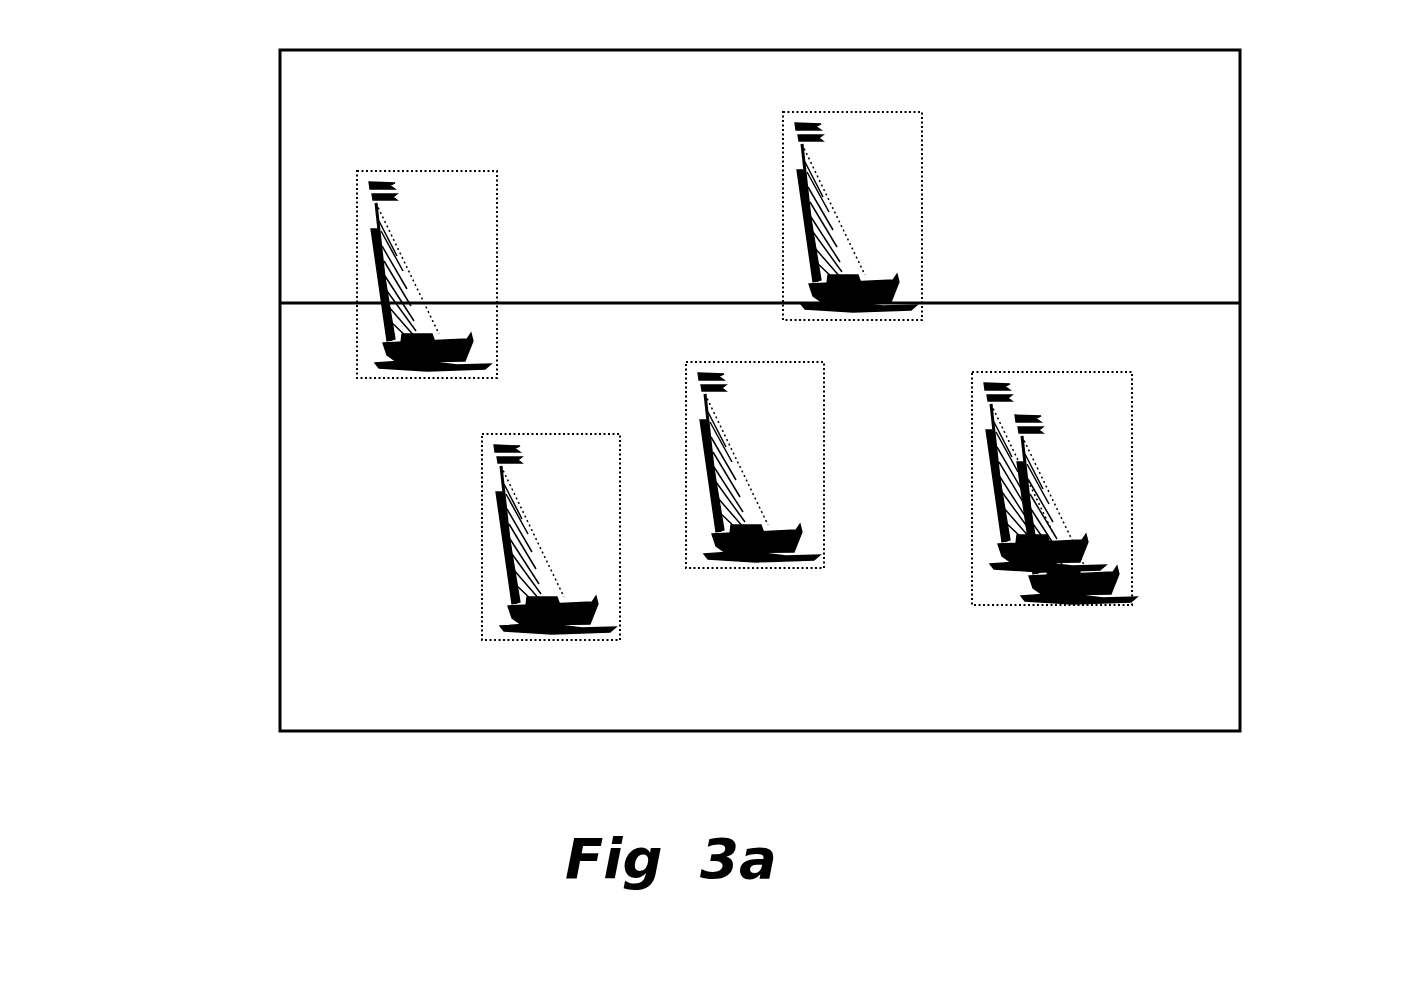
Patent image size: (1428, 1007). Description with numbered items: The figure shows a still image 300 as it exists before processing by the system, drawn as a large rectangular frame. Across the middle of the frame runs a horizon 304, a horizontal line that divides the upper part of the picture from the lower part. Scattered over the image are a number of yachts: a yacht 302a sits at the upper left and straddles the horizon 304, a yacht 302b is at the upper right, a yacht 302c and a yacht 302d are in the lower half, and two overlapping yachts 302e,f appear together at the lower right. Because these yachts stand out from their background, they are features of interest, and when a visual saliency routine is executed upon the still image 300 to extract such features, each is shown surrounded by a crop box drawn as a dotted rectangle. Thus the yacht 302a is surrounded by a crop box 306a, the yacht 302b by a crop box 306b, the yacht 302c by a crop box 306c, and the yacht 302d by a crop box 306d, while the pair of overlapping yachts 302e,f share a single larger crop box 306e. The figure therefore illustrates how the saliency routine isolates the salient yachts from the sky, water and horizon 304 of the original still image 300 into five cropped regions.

The still image 300 is at (436, 126).
The horizon 304 is at (1170, 312).
The yacht 302a is at (375, 343).
The yacht 302b is at (850, 190).
The yacht 302c is at (507, 602).
The yacht 302d is at (778, 560).
The yachts 302e,f is at (1042, 458).
The crop box 306a is at (357, 256).
The crop box 306b is at (922, 137).
The crop box 306c is at (482, 540).
The crop box 306d is at (824, 493).
The crop box 306e is at (1132, 562).